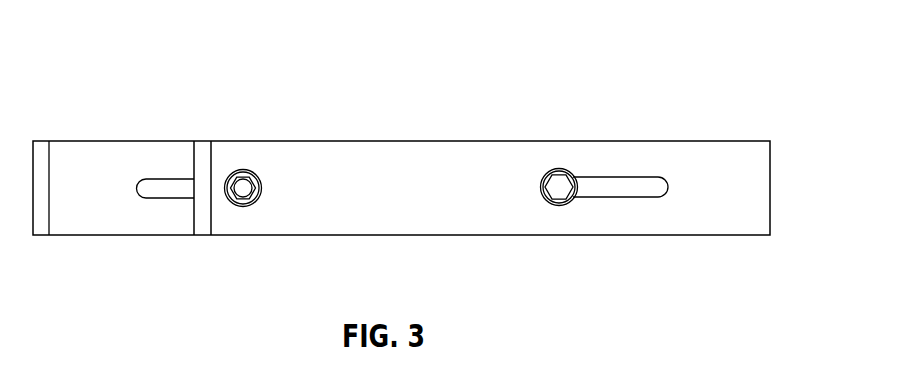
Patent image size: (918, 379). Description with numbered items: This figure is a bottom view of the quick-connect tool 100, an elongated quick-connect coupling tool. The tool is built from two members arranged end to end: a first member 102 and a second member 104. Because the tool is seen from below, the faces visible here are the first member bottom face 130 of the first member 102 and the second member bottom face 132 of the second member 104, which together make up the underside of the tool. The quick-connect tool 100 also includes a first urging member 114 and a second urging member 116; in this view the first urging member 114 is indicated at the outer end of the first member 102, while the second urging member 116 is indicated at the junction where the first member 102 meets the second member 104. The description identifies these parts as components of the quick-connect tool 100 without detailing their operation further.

The quick-connect tool 100 is at (732, 78).
The first member 102 is at (135, 141).
The second member 104 is at (282, 141).
The first urging member 114 is at (43, 225).
The second urging member 116 is at (203, 225).
The first member bottom face 130 is at (112, 216).
The second member bottom face 132 is at (499, 222).